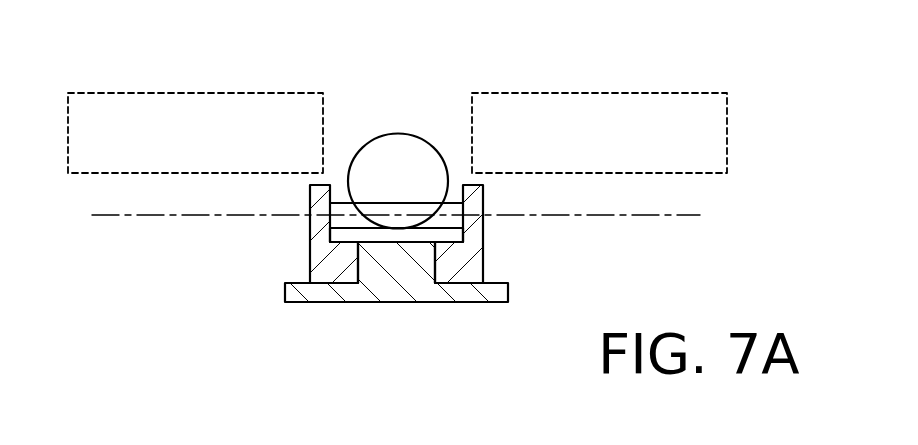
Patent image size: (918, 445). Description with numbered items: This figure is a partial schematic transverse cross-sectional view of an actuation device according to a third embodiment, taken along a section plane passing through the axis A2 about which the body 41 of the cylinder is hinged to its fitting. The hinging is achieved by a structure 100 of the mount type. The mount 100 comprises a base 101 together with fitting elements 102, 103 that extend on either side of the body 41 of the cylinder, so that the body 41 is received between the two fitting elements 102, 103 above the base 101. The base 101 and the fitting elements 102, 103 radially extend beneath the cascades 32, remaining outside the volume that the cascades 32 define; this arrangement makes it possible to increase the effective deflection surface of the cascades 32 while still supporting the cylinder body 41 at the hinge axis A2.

The cascades 32 is at (273, 92).
The body of the cylinder 41 is at (418, 134).
The axis A2 is at (138, 216).
The structure of the mount type 100 is at (377, 298).
The base 101 is at (380, 302).
The fitting element 102 is at (308, 254).
The fitting element 103 is at (482, 271).